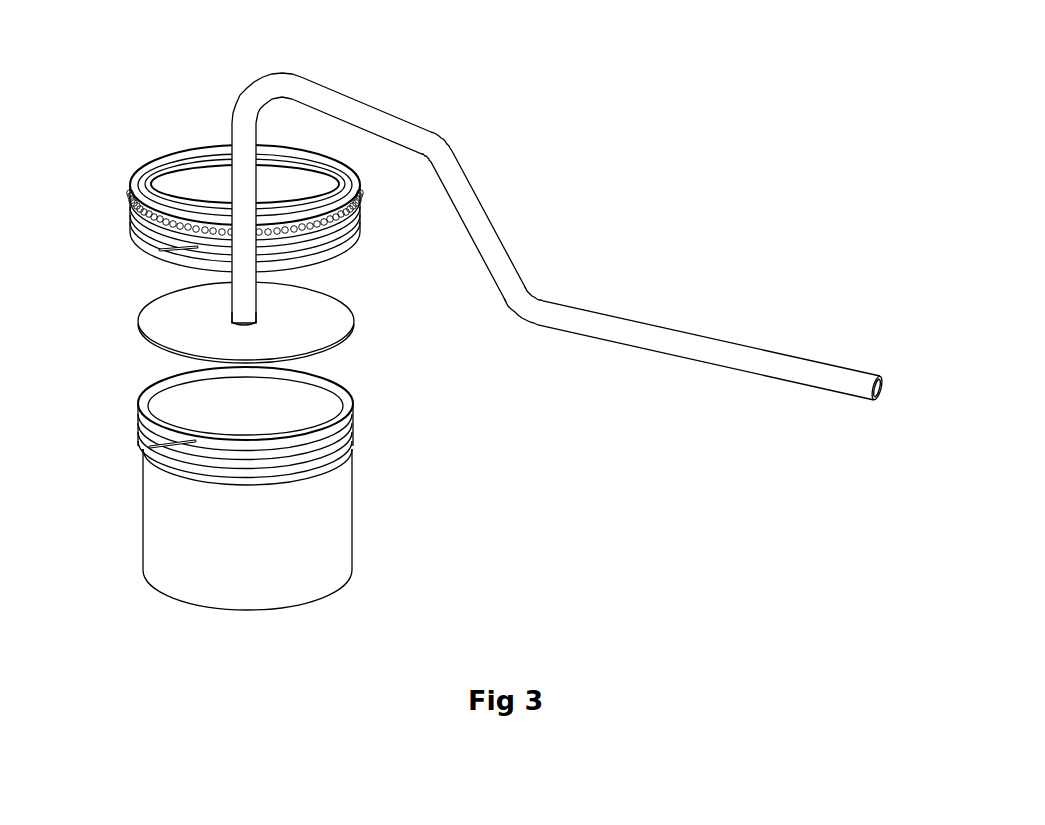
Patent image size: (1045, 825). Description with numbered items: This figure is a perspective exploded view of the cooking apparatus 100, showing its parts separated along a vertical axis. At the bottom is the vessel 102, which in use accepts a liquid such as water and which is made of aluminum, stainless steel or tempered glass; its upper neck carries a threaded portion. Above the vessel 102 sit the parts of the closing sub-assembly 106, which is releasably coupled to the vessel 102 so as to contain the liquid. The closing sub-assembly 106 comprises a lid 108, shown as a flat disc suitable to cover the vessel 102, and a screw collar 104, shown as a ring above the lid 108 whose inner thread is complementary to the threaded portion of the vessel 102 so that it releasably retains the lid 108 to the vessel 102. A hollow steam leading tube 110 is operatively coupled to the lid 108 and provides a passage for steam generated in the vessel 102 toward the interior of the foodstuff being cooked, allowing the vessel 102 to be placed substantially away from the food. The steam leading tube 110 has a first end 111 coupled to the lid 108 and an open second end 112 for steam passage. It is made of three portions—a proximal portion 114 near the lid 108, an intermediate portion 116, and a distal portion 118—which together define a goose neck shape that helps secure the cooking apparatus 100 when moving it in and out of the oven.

The cooking apparatus 100 is at (745, 95).
The vessel 102 is at (353, 517).
The screw collar 104 is at (142, 187).
The closing sub-assembly 106 is at (210, 319).
The lid 108 is at (320, 310).
The steam leading tube 110 is at (520, 277).
The first end 111 is at (233, 318).
The second end 112 is at (892, 388).
The proximal portion 114 is at (248, 145).
The intermediate portion 116 is at (403, 123).
The distal portion 118 is at (773, 363).